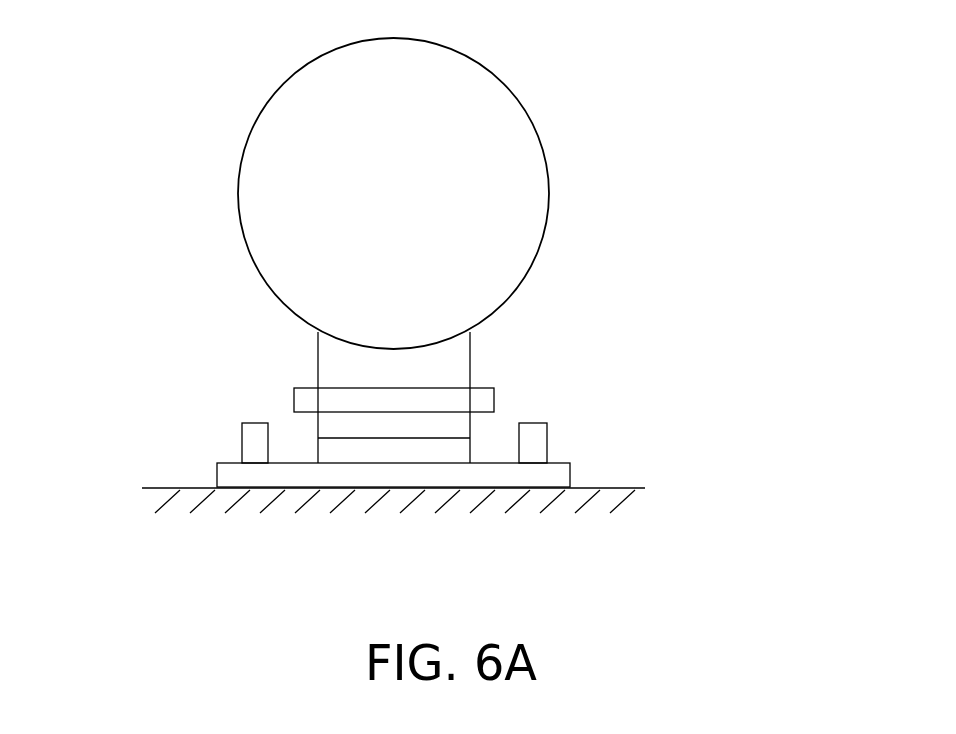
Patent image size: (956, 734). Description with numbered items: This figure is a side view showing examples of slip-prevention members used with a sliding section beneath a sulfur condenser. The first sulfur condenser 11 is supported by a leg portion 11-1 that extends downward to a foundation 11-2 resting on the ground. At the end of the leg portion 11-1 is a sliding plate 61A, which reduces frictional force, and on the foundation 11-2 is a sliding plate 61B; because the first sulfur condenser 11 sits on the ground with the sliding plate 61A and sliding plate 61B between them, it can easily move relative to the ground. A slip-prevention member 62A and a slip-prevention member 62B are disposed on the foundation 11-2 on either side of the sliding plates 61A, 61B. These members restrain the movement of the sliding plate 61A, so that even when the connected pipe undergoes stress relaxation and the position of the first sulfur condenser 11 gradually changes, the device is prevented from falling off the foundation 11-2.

The first sulfur condenser 11 is at (483, 187).
The leg portion 11-1 is at (470, 363).
The foundation 11-2 is at (570, 475).
The sliding plate 61A is at (318, 428).
The sliding plate 61B is at (318, 452).
The slip-prevention member 62A is at (242, 438).
The slip-prevention member 62B is at (547, 444).